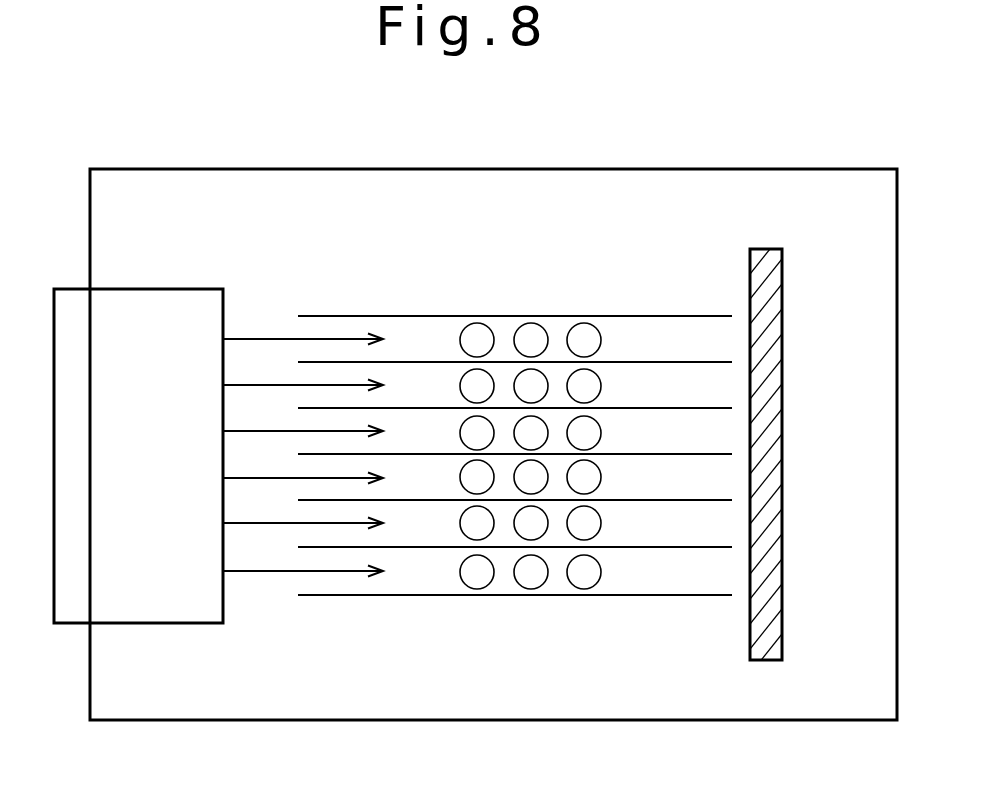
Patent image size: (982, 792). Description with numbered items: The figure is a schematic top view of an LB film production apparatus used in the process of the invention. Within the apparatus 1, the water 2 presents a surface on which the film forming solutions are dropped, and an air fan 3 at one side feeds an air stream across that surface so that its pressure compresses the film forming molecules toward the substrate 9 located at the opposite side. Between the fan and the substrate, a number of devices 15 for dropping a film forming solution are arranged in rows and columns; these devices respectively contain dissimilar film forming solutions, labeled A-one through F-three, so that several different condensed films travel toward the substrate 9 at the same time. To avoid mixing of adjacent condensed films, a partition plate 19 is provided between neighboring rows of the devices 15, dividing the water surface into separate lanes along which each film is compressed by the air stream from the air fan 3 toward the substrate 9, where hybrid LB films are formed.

The electronic device 1 is at (516, 169).
The water 2 is at (680, 207).
The air fan 3 is at (88, 315).
The substrate 9 is at (770, 280).
The device for dropping a film forming solution 15 is at (494, 333).
The partition plate 19 is at (412, 316).